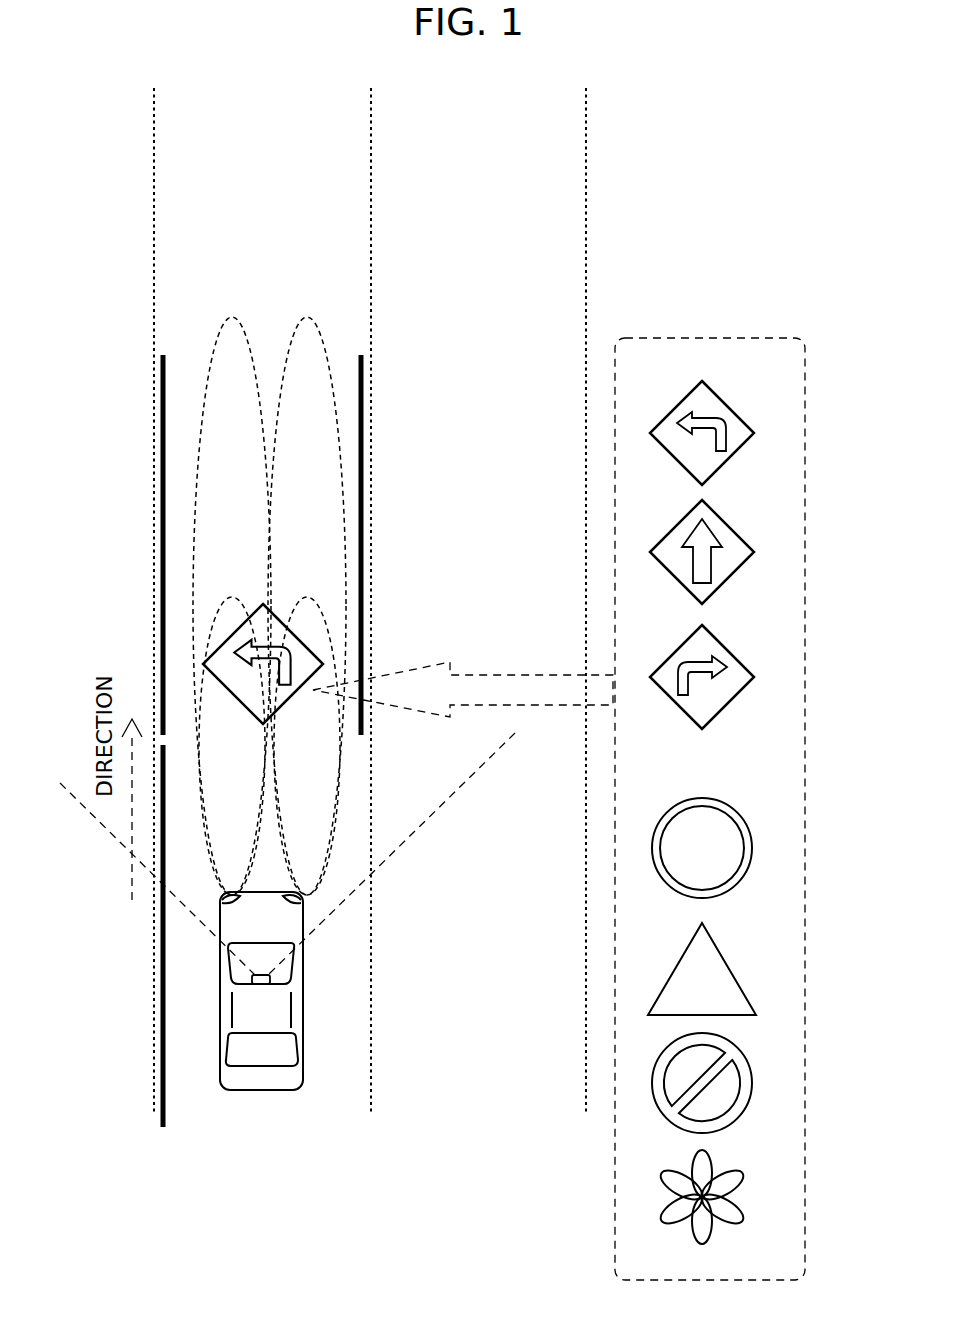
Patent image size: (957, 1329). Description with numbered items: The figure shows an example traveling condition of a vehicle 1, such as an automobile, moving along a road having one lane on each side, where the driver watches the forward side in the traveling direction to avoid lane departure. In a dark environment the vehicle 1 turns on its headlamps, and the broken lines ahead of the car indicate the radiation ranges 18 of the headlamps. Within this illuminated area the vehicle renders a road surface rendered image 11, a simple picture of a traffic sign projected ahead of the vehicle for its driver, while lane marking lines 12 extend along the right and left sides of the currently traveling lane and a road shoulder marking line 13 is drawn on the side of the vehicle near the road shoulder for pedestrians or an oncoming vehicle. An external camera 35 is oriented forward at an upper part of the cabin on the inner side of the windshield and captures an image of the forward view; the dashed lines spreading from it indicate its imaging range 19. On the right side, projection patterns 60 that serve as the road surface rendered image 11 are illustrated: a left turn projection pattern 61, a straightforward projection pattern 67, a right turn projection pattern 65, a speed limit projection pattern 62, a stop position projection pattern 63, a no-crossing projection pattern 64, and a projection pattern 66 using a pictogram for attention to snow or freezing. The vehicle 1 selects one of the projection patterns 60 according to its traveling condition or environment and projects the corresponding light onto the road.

The vehicle 1 is at (228, 1022).
The road surface rendered image 11 is at (212, 641).
The lane marking lines 12 is at (162, 535).
The road shoulder marking line 13 is at (162, 940).
The radiation ranges of the headlamps 18 is at (218, 331).
The imaging range 19 is at (413, 828).
The external camera 35 is at (272, 975).
The projection patterns 60 is at (765, 336).
The left turn projection pattern 61 is at (753, 434).
The speed limit projection pattern 62 is at (752, 849).
The stop position projection pattern 63 is at (740, 985).
The no-crossing projection pattern 64 is at (752, 1084).
The right turn projection pattern 65 is at (738, 662).
The projection pattern using a pictogram 66 is at (740, 1180).
The straightforward projection pattern 67 is at (736, 530).